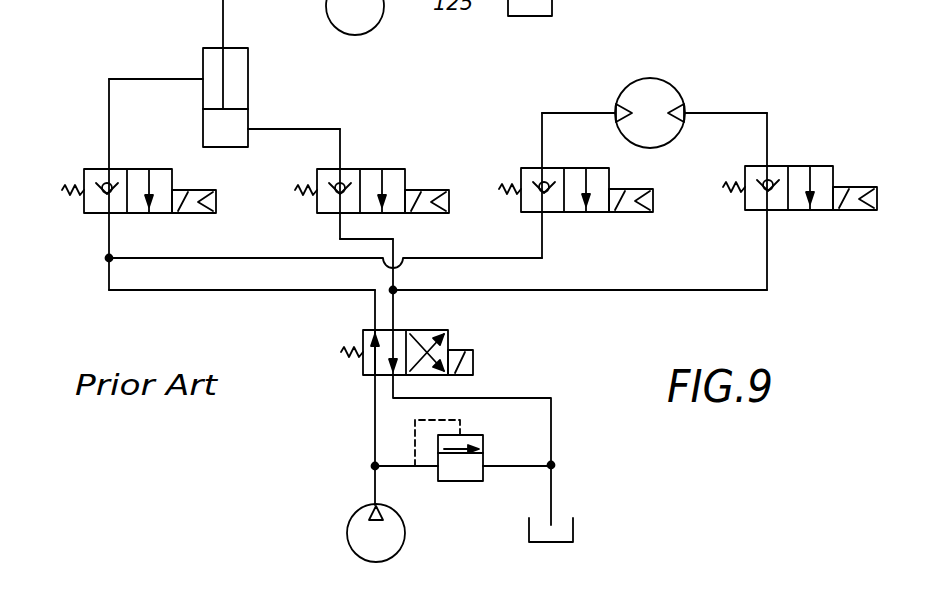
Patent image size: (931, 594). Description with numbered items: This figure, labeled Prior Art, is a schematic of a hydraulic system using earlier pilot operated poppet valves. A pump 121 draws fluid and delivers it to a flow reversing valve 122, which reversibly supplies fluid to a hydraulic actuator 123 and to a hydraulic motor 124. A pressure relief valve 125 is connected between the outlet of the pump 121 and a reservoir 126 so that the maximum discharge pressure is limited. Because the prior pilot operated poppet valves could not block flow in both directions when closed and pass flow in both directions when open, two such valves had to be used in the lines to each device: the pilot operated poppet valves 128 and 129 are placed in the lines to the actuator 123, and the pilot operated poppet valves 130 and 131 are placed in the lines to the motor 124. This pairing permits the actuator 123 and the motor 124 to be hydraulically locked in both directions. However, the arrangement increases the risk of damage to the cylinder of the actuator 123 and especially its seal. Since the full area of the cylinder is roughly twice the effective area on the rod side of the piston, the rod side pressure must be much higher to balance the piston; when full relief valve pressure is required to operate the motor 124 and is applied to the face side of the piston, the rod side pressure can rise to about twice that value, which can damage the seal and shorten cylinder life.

The pump 121 is at (347, 533).
The flow reversing valve 122 is at (425, 330).
The hydraulic actuator 123 is at (243, 94).
The motor 124 is at (680, 83).
The pressure relief valve 125 is at (478, 481).
The reservoir 126 is at (573, 525).
The pilot operated poppet valve 128 is at (168, 126).
The pilot operated poppet valve 129 is at (354, 168).
The solenoid valve with check valve 130 is at (608, 178).
The pilot operated poppet valve 131 is at (797, 168).